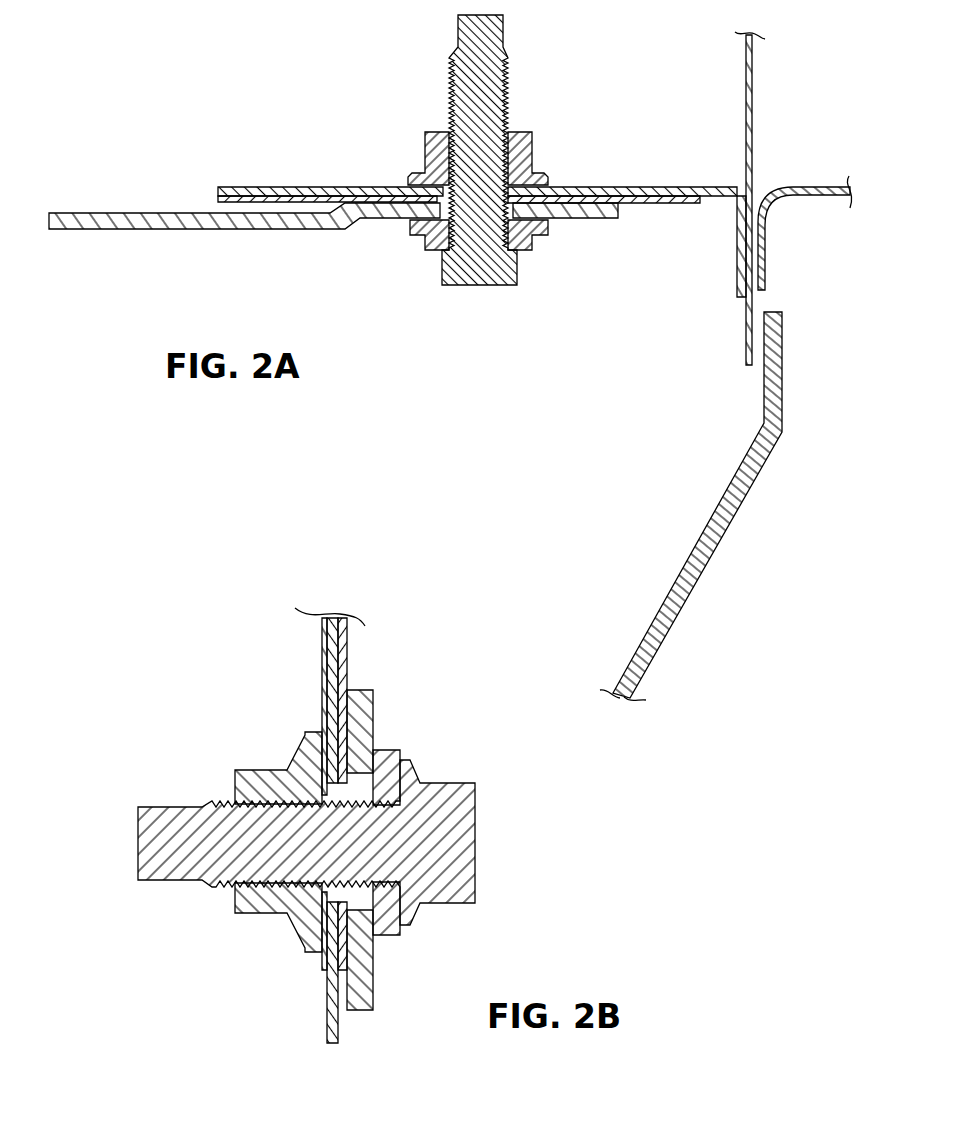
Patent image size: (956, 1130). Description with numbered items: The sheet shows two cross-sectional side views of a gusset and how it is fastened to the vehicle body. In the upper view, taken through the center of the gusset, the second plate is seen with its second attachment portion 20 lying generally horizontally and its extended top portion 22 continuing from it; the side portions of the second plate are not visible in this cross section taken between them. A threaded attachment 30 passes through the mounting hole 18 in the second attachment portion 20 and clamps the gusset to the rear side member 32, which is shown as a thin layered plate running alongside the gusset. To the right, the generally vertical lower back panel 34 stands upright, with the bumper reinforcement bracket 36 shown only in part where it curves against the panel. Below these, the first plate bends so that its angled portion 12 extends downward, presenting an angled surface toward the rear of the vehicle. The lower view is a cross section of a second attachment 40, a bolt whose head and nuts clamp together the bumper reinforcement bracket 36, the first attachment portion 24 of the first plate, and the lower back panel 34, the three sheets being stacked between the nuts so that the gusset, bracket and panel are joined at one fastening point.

In FIG. 2A, the angled portion 12 is at (698, 572).
In FIG. 2A, the mounting hole 18 is at (462, 225).
In FIG. 2A, the second attachment portion 20 is at (587, 212).
In FIG. 2A, the extended top portion 22 is at (110, 212).
In FIG. 2B, the first attachment portion 24 is at (332, 642).
In FIG. 2A, the attachment 30 is at (470, 85).
In FIG. 2A, the rear side member 32 is at (300, 187).
In FIG. 2A, the lower back panel 34 is at (753, 70).
In FIG. 2B, the lower back panel 34 is at (320, 658).
In FIG. 2A, the bumper reinforcement bracket 36 is at (804, 187).
In FIG. 2B, the bumper reinforcement bracket 36 is at (343, 673).
In FIG. 2B, the attachment 40 is at (182, 827).